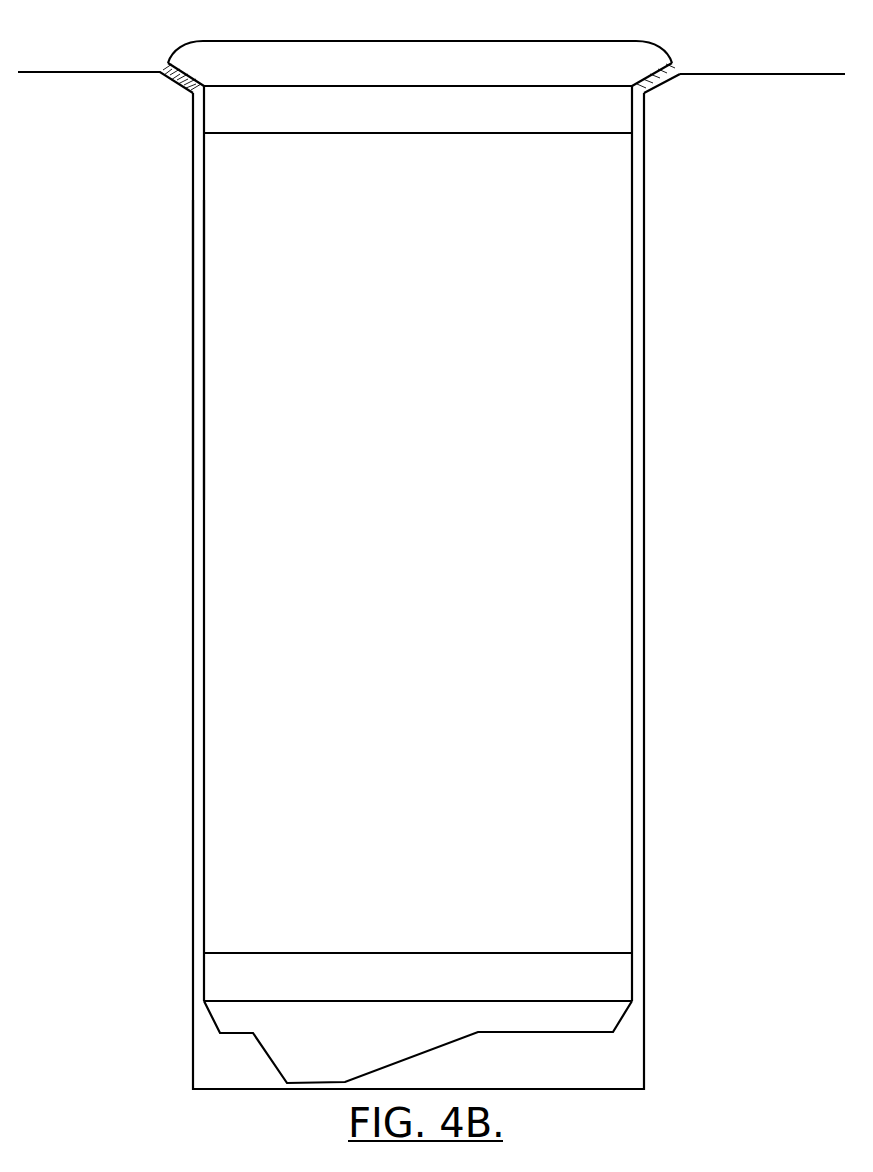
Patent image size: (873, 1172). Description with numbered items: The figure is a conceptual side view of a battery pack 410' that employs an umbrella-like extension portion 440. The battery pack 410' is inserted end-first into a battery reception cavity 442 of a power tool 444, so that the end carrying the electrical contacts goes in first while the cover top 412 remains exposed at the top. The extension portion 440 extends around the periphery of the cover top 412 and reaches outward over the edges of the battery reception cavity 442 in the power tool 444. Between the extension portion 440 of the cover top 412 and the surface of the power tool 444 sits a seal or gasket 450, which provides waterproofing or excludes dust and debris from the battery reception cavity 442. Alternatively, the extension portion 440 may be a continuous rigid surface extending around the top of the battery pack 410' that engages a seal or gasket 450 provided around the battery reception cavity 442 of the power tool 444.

The battery pack 410' is at (381, 587).
The cover top 412 is at (387, 50).
The extension portion 440 is at (185, 58).
The battery reception cavity 442 is at (199, 340).
The power tool 444 is at (825, 87).
The seal or gasket 450 is at (167, 72).